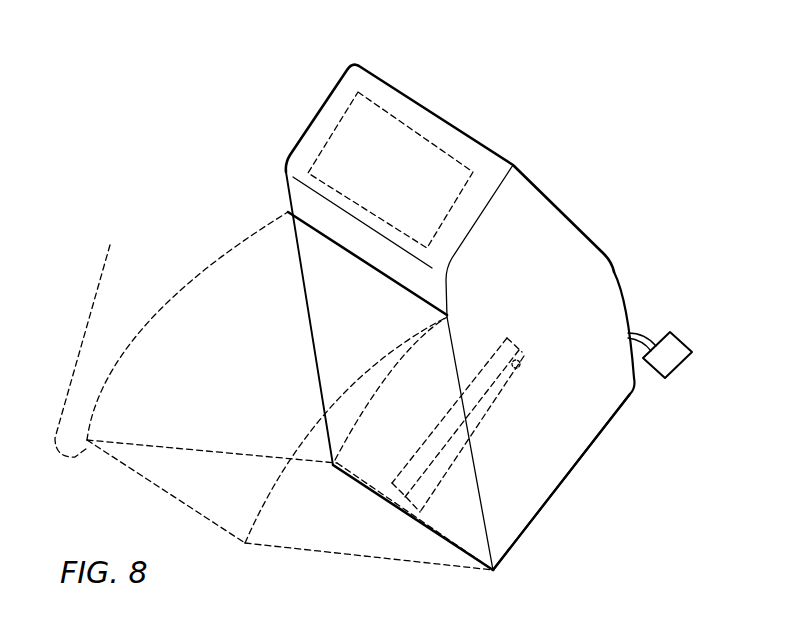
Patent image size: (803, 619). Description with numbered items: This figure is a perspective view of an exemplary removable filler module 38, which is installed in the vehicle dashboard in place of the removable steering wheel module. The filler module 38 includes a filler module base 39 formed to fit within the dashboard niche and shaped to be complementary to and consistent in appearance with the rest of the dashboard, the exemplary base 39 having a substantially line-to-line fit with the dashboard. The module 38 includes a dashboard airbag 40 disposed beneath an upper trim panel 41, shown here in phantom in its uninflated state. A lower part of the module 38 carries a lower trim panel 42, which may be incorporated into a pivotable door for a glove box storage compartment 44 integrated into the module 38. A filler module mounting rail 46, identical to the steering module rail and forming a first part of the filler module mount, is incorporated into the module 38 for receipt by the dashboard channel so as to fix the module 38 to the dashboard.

The filler module 38 is at (540, 178).
The filler module base 39 is at (585, 452).
The dashboard airbag 40 is at (388, 110).
The upper trim panel 41 is at (330, 103).
The lower trim panel 42 is at (303, 283).
The glove box storage compartment 44 is at (364, 406).
The filler module mounting rail 46 is at (493, 413).